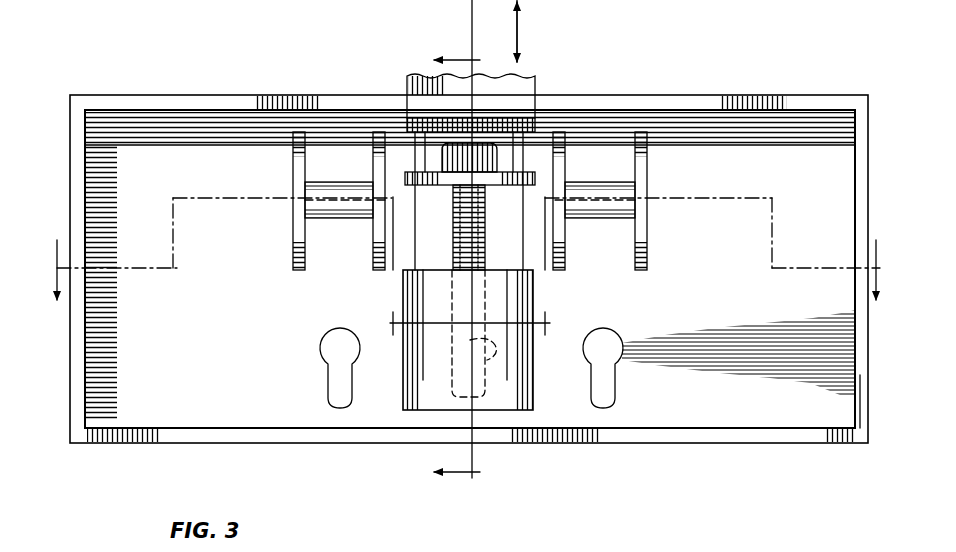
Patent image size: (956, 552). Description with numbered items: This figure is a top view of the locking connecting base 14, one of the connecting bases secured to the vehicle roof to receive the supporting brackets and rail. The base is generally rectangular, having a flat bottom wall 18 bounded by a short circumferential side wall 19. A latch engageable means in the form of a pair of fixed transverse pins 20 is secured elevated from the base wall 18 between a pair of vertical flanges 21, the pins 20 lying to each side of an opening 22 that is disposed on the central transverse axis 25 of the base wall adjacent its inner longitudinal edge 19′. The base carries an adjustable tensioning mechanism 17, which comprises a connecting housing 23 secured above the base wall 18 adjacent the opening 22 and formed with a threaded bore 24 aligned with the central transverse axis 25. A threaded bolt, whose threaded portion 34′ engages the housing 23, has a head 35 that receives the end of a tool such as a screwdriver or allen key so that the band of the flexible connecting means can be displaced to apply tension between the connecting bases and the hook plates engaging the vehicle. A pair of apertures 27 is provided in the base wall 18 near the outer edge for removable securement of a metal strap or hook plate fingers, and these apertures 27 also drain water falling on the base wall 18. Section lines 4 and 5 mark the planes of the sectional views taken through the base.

The connecting base 14 is at (130, 92).
The inner longitudinal edge 19′ is at (230, 94).
The circumferential side wall 19 is at (160, 443).
The bottom wall 18 is at (250, 405).
The adjustable tensioning mechanism 17 is at (503, 250).
The threaded portion of rod 34′ is at (455, 235).
The head 35 is at (445, 152).
The opening 22 is at (520, 126).
The vertical flanges 21 is at (650, 163).
The transverse pins 20 is at (592, 220).
The connecting housing 23 is at (415, 358).
The threaded bore 24 is at (490, 347).
The central transverse axis 25 is at (470, 26).
The apertures 27 is at (343, 402).
The section line 4- 4 is at (463, 249).
The section line 5- 5 is at (475, 243).